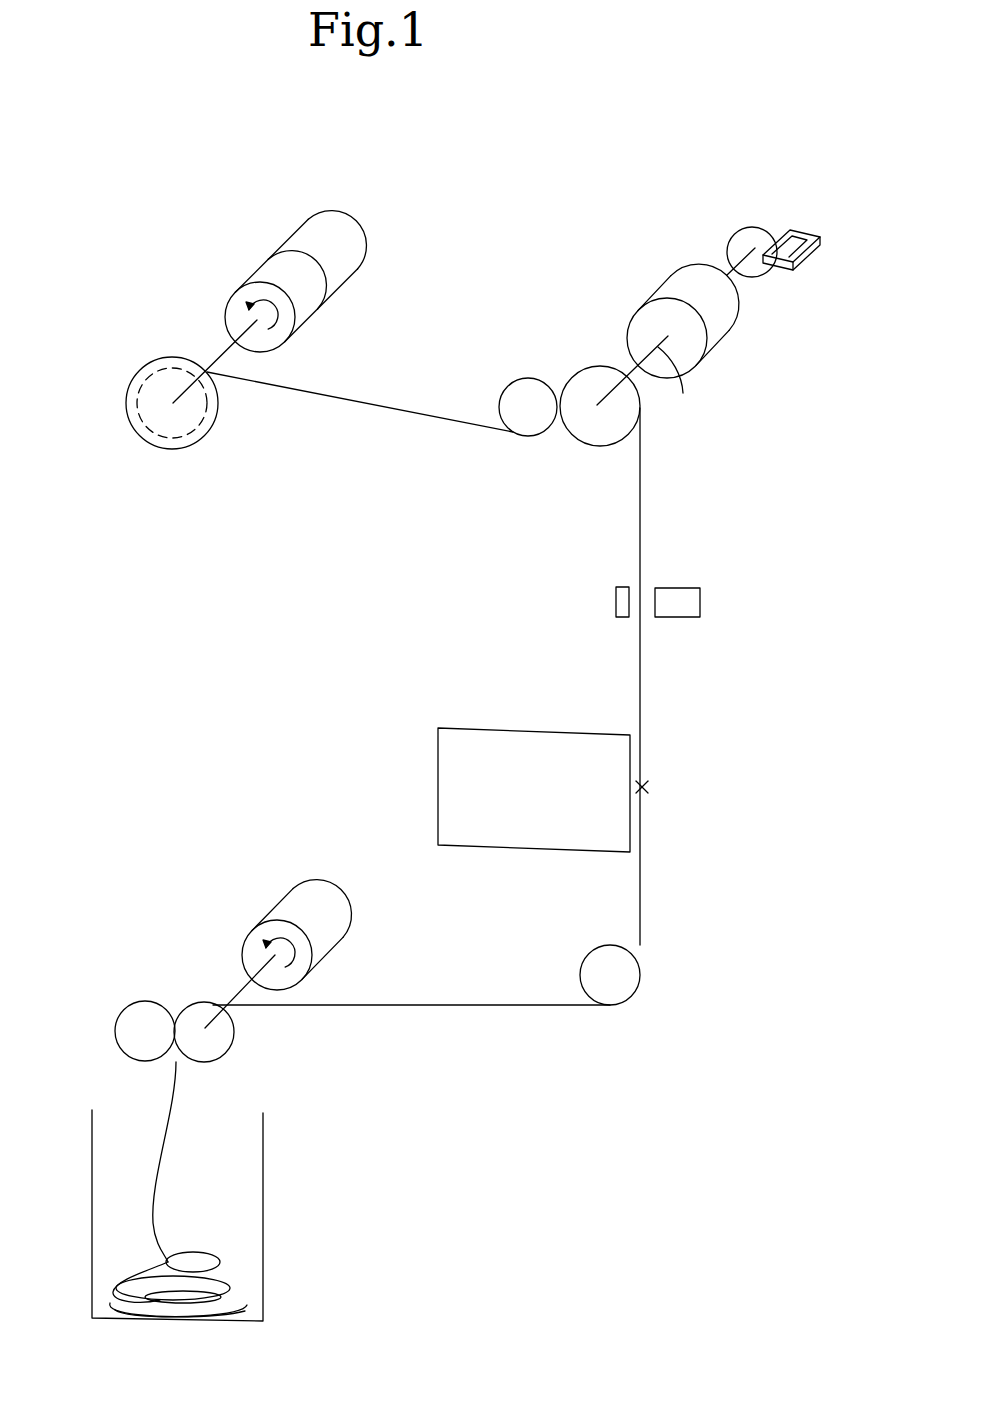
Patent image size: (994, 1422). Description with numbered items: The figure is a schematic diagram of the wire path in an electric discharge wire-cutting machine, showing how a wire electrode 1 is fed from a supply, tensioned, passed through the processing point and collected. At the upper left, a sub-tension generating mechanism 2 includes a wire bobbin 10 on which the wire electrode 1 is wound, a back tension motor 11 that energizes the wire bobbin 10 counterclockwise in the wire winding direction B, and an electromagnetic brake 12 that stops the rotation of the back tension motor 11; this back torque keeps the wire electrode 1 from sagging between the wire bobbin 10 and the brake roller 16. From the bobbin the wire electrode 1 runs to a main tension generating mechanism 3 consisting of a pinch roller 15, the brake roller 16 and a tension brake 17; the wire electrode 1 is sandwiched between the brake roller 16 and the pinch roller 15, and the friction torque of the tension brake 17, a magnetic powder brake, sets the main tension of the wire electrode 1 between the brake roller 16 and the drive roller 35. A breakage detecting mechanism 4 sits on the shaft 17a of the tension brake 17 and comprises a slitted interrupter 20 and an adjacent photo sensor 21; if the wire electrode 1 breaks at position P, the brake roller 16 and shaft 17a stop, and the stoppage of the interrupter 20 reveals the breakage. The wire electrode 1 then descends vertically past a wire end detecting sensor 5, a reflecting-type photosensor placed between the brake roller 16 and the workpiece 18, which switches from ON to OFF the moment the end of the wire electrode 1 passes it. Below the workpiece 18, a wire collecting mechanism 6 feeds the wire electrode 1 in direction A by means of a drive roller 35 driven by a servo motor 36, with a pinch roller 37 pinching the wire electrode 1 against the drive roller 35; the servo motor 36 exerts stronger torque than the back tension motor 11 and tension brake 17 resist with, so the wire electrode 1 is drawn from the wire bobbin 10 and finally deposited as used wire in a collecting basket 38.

The wire electrode 1 is at (642, 890).
The sub-tension generating mechanism 2 is at (149, 289).
The main tension generating mechanism 3 is at (577, 298).
The breakage detecting mechanism 4 is at (798, 181).
The wire end detecting sensor 5 is at (693, 582).
The wire collecting mechanism 6 is at (110, 903).
The wire bobbin 10 is at (172, 443).
The back tension motor 11 is at (273, 273).
The electromagnetic brake 12 is at (310, 240).
The pinch roller 15 is at (517, 397).
The brake roller 16 is at (593, 383).
The tension brake 17 is at (680, 283).
The shaft 17a is at (694, 385).
The workpiece 18 is at (492, 745).
The interrupter 20 is at (747, 235).
The photo sensor 21 is at (808, 230).
The drive roller 35 is at (223, 1038).
The servo motor 36 is at (293, 912).
The pinch roller 37 is at (132, 1020).
The collecting basket 38 is at (265, 1207).
The direction A is at (622, 643).
The direction B is at (668, 710).
The position P is at (652, 789).